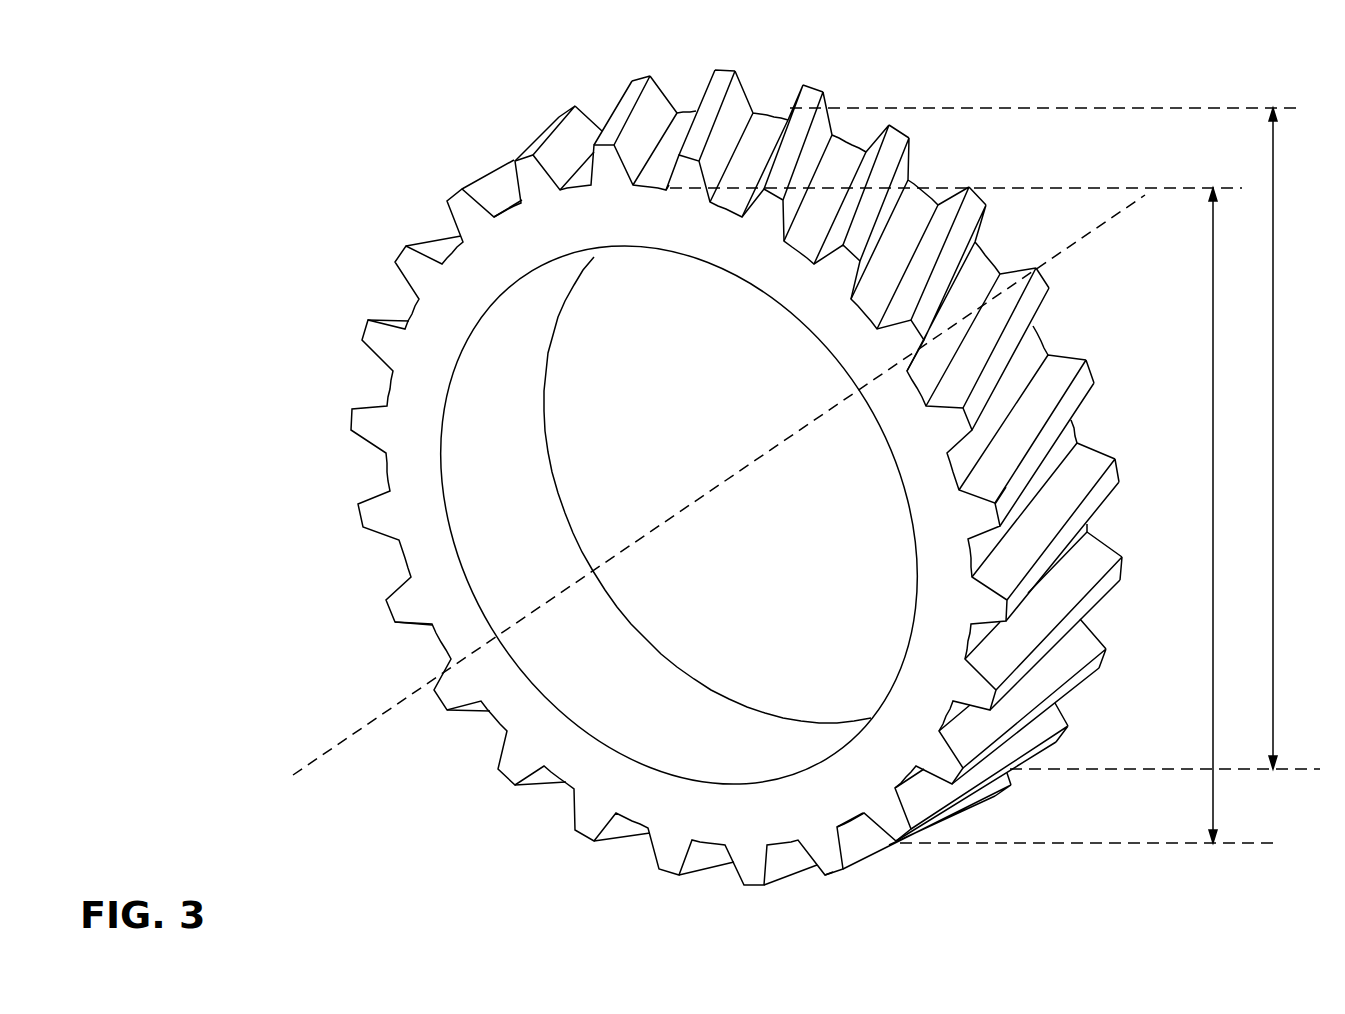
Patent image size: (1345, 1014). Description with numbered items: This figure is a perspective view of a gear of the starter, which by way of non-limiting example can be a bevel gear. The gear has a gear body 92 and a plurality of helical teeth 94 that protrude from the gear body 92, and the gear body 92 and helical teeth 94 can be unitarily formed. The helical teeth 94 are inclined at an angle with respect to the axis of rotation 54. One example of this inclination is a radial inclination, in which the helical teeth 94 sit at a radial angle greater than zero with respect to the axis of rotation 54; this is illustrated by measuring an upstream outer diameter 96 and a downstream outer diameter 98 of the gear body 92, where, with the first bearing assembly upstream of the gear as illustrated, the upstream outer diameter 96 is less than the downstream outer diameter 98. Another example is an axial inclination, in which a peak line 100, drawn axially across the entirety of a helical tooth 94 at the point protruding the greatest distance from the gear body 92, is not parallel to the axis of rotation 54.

The axis of rotation 54 is at (360, 723).
The gear body 92 is at (687, 104).
The helical teeth 94 is at (565, 107).
The upstream outer diameter 96 is at (1213, 473).
The downstream outer diameter 98 is at (1274, 400).
The peak line 100 is at (1020, 323).